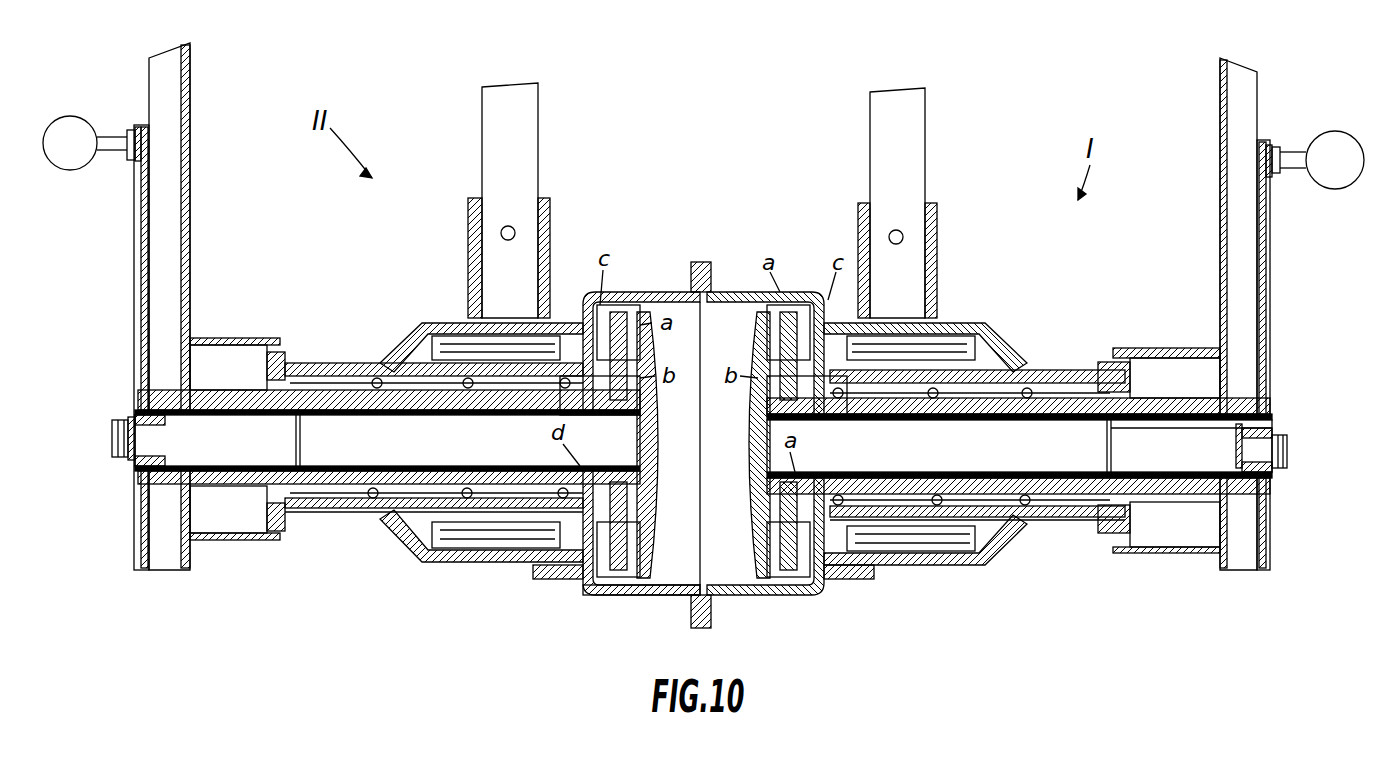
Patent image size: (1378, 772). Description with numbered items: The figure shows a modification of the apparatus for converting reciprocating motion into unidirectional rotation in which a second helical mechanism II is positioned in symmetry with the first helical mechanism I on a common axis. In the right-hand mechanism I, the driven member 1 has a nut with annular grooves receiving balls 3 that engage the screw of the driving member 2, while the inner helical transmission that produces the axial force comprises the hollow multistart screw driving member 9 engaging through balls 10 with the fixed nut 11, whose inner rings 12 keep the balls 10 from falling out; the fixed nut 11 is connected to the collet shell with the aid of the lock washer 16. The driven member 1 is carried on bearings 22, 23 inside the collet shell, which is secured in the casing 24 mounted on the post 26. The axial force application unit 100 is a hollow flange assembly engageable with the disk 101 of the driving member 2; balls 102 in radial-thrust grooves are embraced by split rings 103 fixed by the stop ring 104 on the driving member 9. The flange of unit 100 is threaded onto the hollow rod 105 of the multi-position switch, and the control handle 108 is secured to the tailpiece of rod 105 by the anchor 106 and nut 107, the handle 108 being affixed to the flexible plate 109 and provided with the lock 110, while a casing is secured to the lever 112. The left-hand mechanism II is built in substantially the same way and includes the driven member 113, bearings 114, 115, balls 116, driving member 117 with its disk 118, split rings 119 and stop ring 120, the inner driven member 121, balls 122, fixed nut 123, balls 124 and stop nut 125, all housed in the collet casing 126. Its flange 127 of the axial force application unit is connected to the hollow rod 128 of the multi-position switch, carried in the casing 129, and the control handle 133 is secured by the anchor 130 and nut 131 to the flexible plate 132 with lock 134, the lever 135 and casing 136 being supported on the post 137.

The driven member 1 is at (792, 292).
The driving member 2 is at (990, 555).
The balls 3 is at (872, 580).
The driving member 9 is at (798, 478).
The balls 10 is at (1025, 472).
The fixed nut 11 is at (1155, 553).
The inner rings 12 is at (1058, 385).
The lock washer 16 is at (1095, 548).
The bearing 22 is at (848, 318).
The bearing 23 is at (940, 330).
The casing 24 is at (937, 240).
The post 26 is at (915, 128).
The axial force application unit 100 is at (765, 350).
The disk 101 is at (805, 295).
The balls 102 is at (766, 512).
The split rings 103 is at (770, 398).
The stop ring 104 is at (832, 420).
The hollow rod 105 is at (895, 420).
The anchor 106 is at (1236, 447).
The nut 107 is at (1292, 436).
The control handle 108 is at (1335, 135).
The flexible plate 109 is at (1270, 262).
The lock 110 is at (1250, 150).
The lever 112 is at (1240, 103).
The driven member 113 is at (638, 292).
The bearing 114 is at (565, 304).
The bearing 115 is at (480, 322).
The balls 116 is at (505, 565).
The driving member 117 is at (405, 545).
The disk 118 is at (620, 596).
The split rings 119 is at (640, 500).
The stop ring 120 is at (585, 468).
The driven member 121 is at (600, 413).
The balls 122 is at (440, 410).
The fixed nut 123 is at (320, 362).
The balls 124 is at (640, 528).
The stop nut 125 is at (288, 535).
The collet casing 126 is at (382, 348).
The flange of axial force application unit 127 is at (650, 480).
The hollow rod 128 is at (360, 470).
The casing 129 is at (250, 542).
The anchor 130 is at (178, 442).
The nut 131 is at (120, 420).
The flexible plate 132 is at (134, 232).
The control handle 133 is at (70, 116).
The lock 134 is at (150, 140).
The lever 135 is at (170, 80).
The casing 136 is at (545, 215).
The post 137 is at (527, 125).